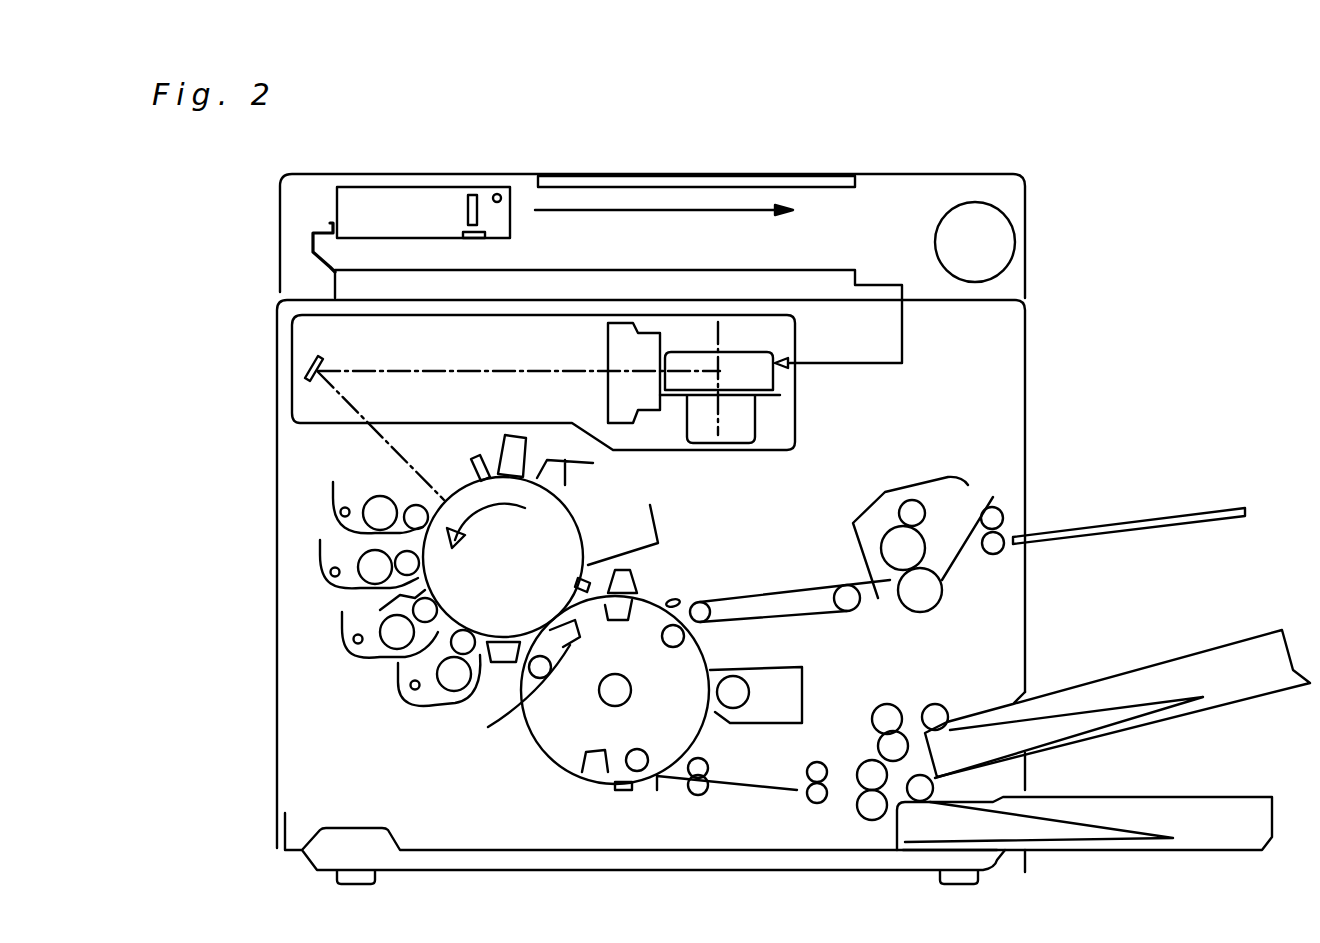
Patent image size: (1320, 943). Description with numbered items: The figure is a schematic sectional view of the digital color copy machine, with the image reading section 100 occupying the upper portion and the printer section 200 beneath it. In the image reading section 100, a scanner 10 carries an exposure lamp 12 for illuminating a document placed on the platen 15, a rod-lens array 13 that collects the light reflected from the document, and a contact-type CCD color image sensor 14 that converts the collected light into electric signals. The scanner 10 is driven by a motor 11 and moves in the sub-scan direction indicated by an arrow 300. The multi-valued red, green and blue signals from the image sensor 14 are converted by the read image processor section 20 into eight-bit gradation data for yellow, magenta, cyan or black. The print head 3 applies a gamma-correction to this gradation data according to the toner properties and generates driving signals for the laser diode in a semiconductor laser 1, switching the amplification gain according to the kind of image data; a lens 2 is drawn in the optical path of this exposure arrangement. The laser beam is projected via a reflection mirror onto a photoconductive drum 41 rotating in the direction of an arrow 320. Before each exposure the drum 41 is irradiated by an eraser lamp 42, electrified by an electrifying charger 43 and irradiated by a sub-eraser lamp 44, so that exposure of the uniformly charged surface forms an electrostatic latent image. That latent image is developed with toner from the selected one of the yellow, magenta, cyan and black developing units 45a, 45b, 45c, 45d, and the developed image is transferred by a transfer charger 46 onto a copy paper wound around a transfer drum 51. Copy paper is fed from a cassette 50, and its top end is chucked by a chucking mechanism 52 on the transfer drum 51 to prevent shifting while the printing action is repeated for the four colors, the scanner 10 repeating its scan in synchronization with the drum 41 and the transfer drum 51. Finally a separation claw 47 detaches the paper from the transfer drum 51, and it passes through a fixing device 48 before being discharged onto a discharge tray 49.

The semiconductor laser 1 is at (733, 363).
The lens 2 is at (645, 393).
The print head 3 is at (773, 378).
The scanner 10 is at (414, 168).
The motor 11 is at (1015, 232).
The exposure lamp 12 is at (498, 193).
The rod-lens array 13 is at (468, 213).
The CCD color image sensor 14 is at (482, 238).
The platen 15 is at (782, 177).
The read image processor section 20 is at (347, 280).
The photoconductive drum 41 is at (520, 570).
The eraser lamp 42 is at (593, 463).
The electrifying charger 43 is at (522, 438).
The sub-eraser lamp 44 is at (478, 458).
The yellow developing unit 45a is at (327, 502).
The magenta developing unit 45b is at (318, 572).
The cyan developing unit 45c is at (340, 640).
The black developing unit 45d is at (398, 688).
The transfer charger 46 is at (567, 643).
The separation claw 47 is at (680, 598).
The fixing device 48 is at (885, 492).
The discharge tray 49 is at (1190, 512).
The cassette 50 is at (1212, 792).
The transfer drum 51 is at (543, 757).
The chucking mechanism 52 is at (622, 790).
The image reading section 100 is at (205, 172).
The printer section 200 is at (200, 848).
The arrow 300 is at (655, 210).
The arrow 320 is at (432, 500).